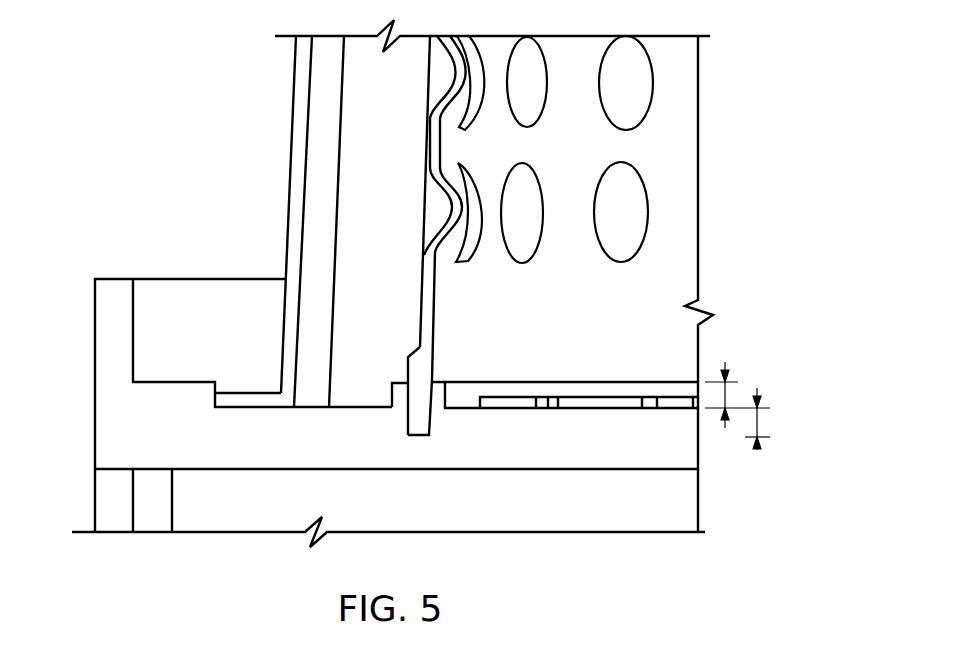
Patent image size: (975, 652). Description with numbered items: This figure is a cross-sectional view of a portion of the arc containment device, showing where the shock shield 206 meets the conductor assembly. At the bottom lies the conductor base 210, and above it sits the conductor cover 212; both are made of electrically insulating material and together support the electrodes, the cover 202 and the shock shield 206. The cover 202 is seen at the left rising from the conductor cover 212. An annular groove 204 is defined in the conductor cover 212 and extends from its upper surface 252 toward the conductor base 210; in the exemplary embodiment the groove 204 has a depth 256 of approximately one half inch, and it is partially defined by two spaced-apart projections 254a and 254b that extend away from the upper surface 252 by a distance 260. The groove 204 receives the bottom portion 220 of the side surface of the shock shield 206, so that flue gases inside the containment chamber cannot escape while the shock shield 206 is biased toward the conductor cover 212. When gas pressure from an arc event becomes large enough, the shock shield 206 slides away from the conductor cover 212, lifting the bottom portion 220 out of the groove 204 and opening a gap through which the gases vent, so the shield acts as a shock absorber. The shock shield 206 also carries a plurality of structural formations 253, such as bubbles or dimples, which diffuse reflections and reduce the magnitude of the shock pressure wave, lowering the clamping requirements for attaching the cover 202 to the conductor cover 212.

The cover 202 is at (292, 117).
The shock shield 206 is at (432, 145).
The structural formations 253 is at (424, 214).
The first projection 254a is at (397, 379).
The second projection 254b is at (433, 426).
The bottom portion 220 is at (433, 355).
The upper surface 252 is at (353, 406).
The conductor cover 212 is at (118, 413).
The annular groove 204 is at (407, 428).
The conductor base 210 is at (487, 498).
The distance 260 is at (735, 392).
The depth 256 is at (761, 418).